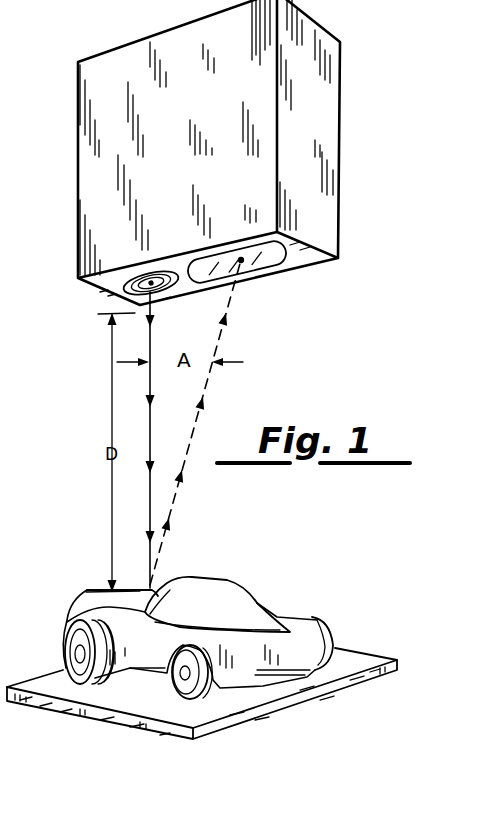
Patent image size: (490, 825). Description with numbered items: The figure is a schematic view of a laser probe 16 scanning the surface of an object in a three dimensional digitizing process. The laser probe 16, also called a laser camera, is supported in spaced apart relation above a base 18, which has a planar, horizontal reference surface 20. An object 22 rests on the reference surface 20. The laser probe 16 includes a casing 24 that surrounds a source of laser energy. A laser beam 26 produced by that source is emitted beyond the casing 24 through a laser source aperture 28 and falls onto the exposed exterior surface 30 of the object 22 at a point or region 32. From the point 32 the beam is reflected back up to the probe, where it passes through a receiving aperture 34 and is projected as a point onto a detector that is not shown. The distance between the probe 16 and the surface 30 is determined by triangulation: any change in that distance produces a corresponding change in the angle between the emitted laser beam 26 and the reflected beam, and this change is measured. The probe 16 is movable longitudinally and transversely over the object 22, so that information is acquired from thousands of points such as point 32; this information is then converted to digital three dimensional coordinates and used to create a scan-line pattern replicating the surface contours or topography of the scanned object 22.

The laser probe 16 is at (346, 122).
The casing 24 is at (313, 43).
The laser source aperture 28 is at (140, 286).
The receiving aperture 34 is at (263, 257).
The laser beam 26 is at (150, 386).
The point or region 32 is at (152, 585).
The exposed exterior surface 30 is at (237, 593).
The object 22 is at (332, 628).
The reference surface 20 is at (353, 660).
The base 18 is at (368, 678).